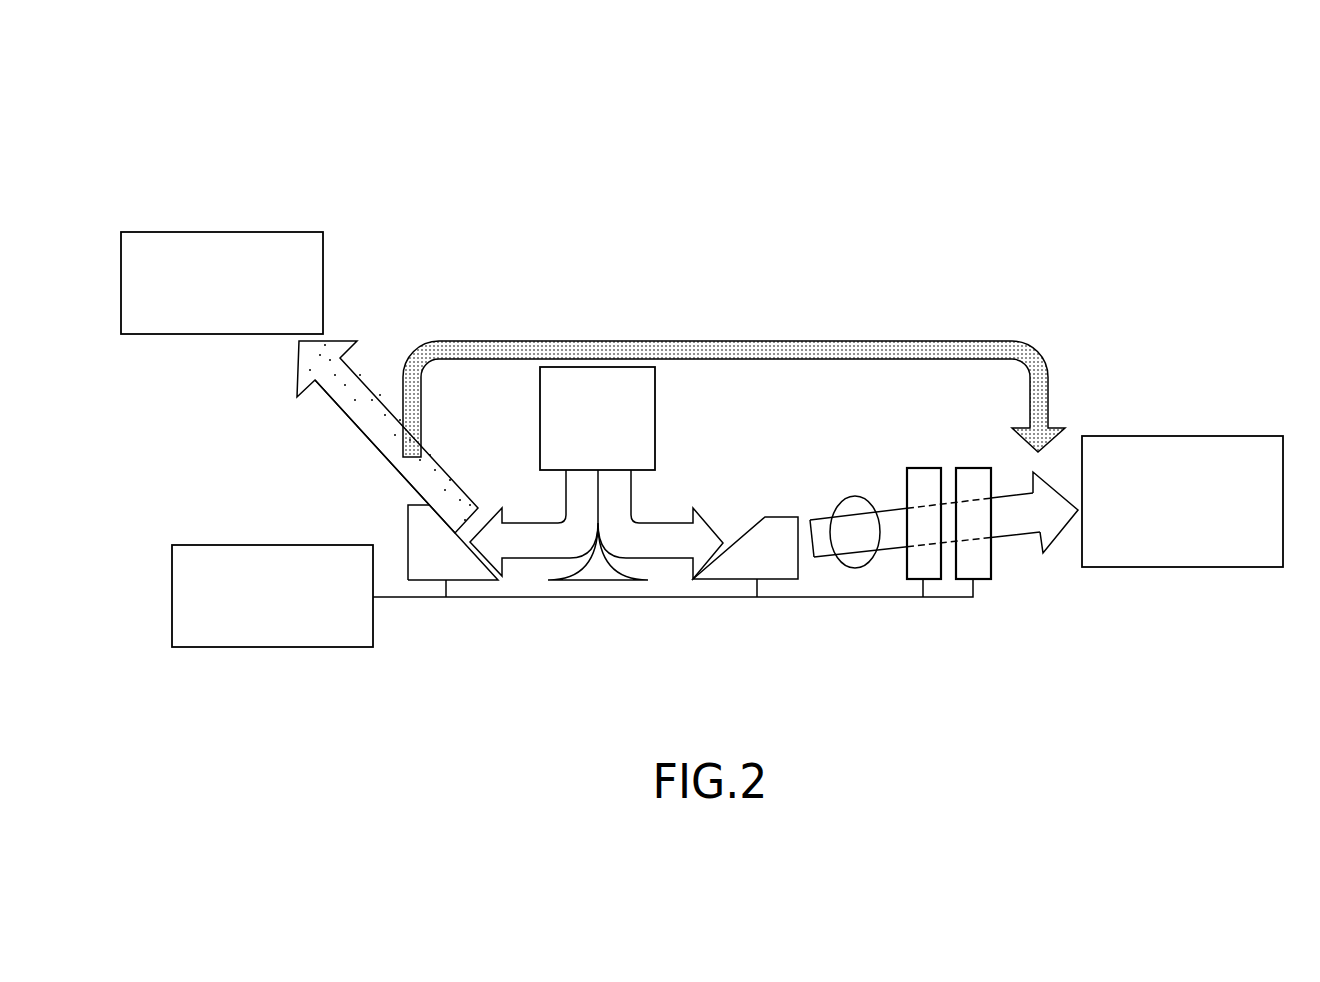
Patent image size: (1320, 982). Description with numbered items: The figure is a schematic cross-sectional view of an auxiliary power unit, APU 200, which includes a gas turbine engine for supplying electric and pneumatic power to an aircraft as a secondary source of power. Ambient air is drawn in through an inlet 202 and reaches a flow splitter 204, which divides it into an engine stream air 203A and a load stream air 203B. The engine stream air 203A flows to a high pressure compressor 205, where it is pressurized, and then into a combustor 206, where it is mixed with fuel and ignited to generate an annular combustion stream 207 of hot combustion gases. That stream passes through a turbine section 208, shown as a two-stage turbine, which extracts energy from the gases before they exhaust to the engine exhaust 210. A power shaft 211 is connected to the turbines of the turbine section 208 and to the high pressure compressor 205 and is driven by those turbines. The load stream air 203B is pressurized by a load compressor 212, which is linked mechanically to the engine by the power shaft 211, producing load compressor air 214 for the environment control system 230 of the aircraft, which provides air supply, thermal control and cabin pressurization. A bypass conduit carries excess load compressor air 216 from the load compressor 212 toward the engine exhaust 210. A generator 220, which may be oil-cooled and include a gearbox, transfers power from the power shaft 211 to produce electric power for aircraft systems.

The APU 200 is at (309, 158).
The inlet 202 is at (597, 367).
The engine stream air 203A is at (669, 523).
The load stream air 203B is at (532, 523).
The flow splitter 204 is at (602, 570).
The high pressure compressor 205 is at (777, 563).
The combustor 206 is at (855, 568).
The annular combustion stream 207 is at (888, 512).
The turbine section 208 is at (988, 609).
The engine exhaust 210 is at (1180, 568).
The power shaft 211 is at (533, 597).
The load compressor 212 is at (425, 563).
The load compressor air 214 is at (339, 411).
The excess load compressor air 216 is at (757, 341).
The generator 220 is at (273, 647).
The environment control system 230 is at (323, 280).